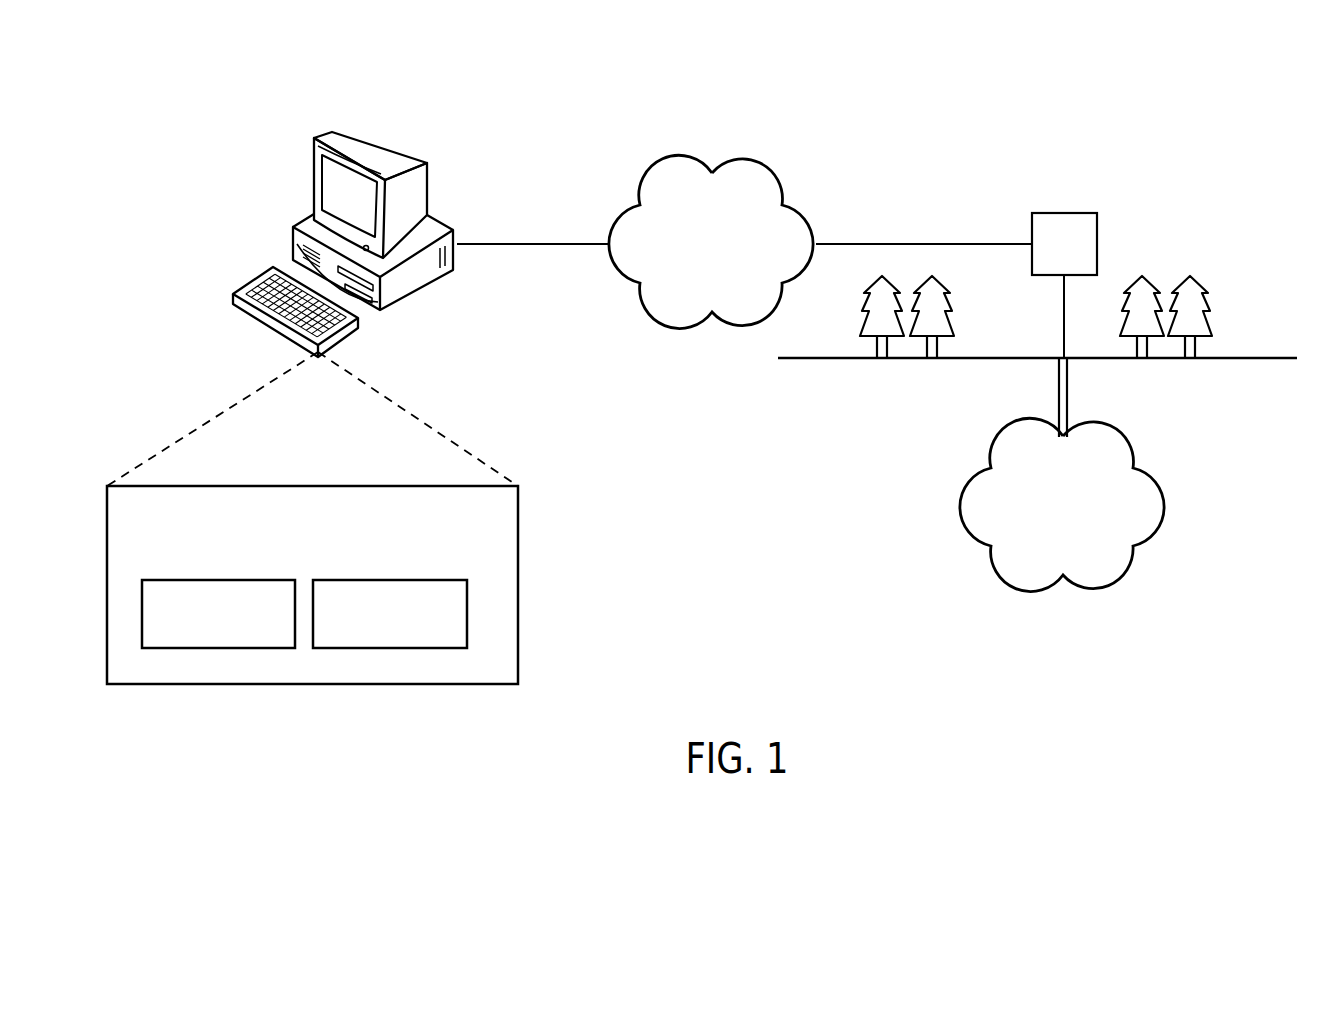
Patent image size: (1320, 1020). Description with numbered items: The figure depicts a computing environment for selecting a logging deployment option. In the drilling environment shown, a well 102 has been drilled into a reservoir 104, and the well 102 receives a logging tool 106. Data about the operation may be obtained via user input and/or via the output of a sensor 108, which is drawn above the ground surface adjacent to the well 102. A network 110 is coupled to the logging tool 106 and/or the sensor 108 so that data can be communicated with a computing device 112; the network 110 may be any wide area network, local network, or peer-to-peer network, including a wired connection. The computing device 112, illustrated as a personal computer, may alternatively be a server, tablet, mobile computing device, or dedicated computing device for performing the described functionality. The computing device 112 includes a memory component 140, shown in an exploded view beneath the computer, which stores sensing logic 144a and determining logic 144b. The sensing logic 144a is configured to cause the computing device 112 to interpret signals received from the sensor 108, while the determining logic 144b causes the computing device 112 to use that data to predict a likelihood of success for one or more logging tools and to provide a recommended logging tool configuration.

The well 102 is at (1068, 394).
The reservoir 104 is at (1167, 505).
The logging tool 106 is at (1040, 298).
The sensor 108 is at (1037, 200).
The network 110 is at (741, 158).
The computing device 112 is at (430, 186).
The memory component 140 is at (325, 486).
The sensing logic 144a is at (252, 580).
The determining logic 144b is at (425, 580).